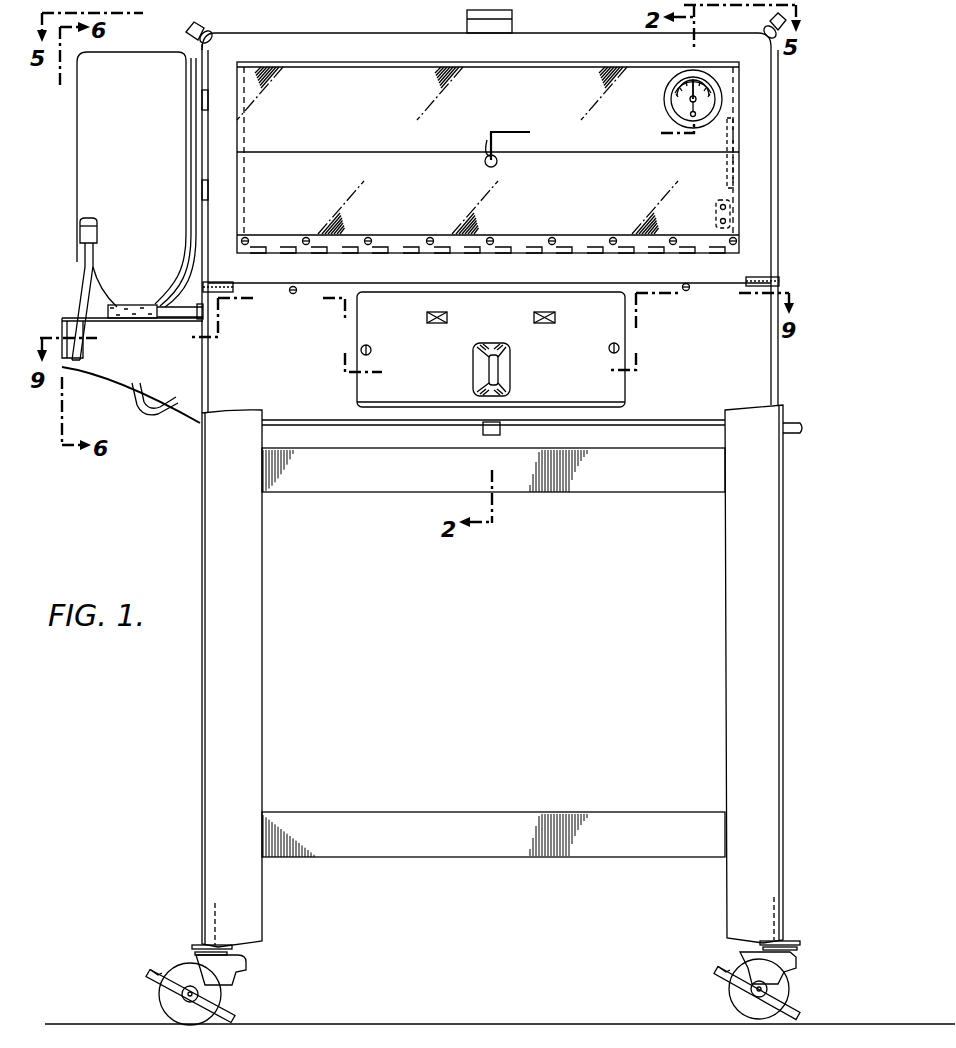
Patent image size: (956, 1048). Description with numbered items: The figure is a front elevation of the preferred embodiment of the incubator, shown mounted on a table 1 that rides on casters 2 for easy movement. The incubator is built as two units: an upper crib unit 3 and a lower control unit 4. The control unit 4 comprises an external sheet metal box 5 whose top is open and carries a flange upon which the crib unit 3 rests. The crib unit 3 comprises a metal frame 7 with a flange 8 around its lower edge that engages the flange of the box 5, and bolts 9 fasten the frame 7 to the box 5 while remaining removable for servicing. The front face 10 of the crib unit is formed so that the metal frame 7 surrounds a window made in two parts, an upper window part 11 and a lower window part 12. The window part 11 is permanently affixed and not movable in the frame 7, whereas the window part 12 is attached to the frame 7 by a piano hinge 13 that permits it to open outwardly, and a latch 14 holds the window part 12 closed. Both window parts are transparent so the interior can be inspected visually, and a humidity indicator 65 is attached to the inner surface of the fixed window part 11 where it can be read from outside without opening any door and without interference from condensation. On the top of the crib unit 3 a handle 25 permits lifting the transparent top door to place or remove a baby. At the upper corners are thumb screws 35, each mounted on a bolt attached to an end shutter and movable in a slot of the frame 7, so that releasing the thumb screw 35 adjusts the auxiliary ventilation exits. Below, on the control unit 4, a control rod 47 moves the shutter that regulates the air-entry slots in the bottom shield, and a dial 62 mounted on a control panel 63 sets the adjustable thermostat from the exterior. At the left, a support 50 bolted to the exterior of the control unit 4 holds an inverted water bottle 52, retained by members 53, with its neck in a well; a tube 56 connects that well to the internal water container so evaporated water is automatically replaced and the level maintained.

The table 1 is at (257, 690).
The casters 2 is at (220, 995).
The crib unit 3 is at (385, 46).
The control unit 4 is at (745, 368).
The sheet metal box 5 is at (491, 334).
The metal frame 7 is at (763, 236).
The flange 8 is at (237, 212).
The bolts 9 is at (293, 294).
The front face 10 is at (357, 226).
The window part 11 is at (488, 109).
The window part 12 is at (472, 207).
The piano hinge 13 is at (404, 244).
The latch 14 is at (498, 165).
The handle 25 is at (513, 22).
The thumb screw 35 is at (187, 28).
The control rod 47 is at (483, 431).
The support 50 is at (100, 360).
The water bottle 52 is at (70, 162).
The members 53 is at (85, 264).
The tube 56 is at (147, 414).
The dial 62 is at (510, 378).
The control panel 63 is at (626, 388).
The humidity indicator 65 is at (667, 108).